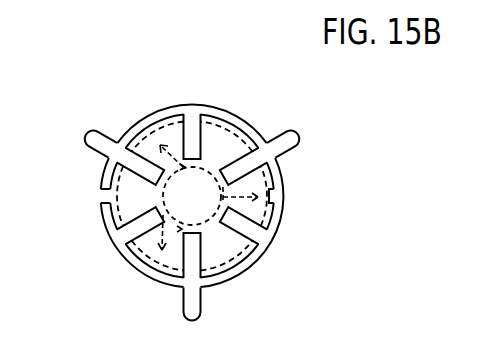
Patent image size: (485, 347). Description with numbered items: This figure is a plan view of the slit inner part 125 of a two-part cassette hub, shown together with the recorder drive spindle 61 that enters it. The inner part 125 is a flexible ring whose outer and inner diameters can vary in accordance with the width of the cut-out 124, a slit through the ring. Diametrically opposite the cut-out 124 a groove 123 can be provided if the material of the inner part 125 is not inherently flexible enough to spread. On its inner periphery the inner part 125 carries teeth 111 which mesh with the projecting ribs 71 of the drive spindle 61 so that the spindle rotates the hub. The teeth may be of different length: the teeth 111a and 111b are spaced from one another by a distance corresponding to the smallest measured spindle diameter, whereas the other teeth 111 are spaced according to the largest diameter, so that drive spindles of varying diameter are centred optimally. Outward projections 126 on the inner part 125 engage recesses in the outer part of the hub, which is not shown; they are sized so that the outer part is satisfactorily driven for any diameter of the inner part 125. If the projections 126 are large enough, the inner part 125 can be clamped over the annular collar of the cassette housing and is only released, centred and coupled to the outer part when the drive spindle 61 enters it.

The recorder drive spindle 61 is at (208, 194).
The projecting ribs 71 is at (145, 253).
The teeth 111 is at (192, 196).
The tooth 111a is at (182, 126).
The tooth 111b is at (182, 260).
The groove 123 is at (283, 193).
The cut-out 124 is at (104, 195).
The inner part 125 is at (286, 242).
The projections 126 is at (282, 134).